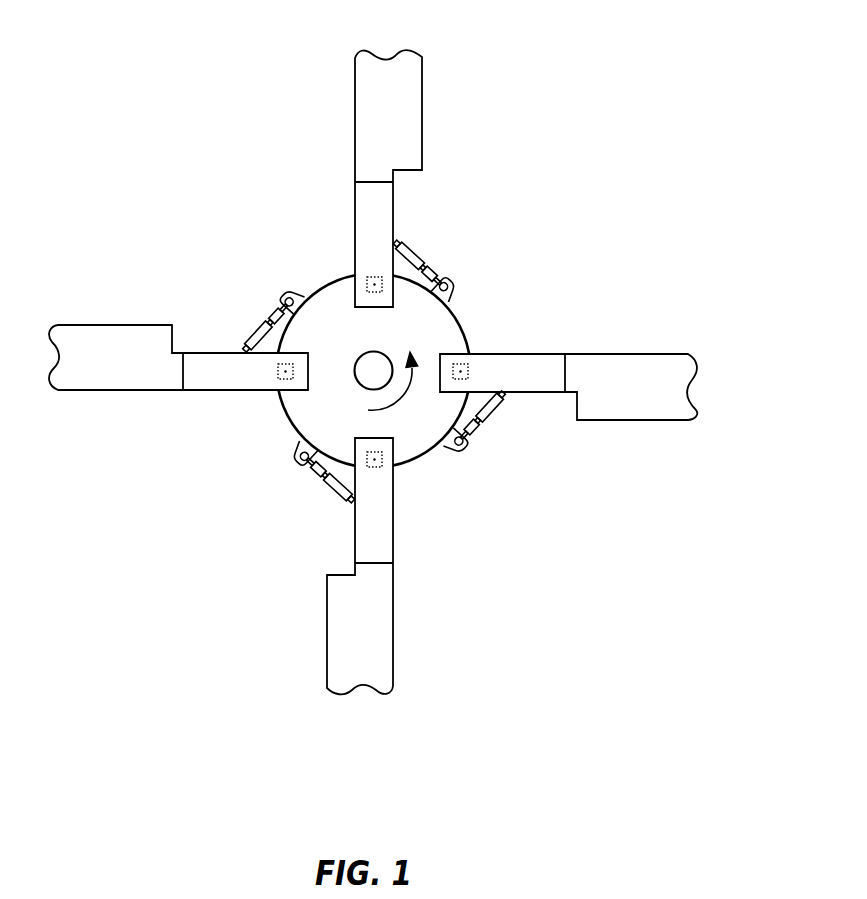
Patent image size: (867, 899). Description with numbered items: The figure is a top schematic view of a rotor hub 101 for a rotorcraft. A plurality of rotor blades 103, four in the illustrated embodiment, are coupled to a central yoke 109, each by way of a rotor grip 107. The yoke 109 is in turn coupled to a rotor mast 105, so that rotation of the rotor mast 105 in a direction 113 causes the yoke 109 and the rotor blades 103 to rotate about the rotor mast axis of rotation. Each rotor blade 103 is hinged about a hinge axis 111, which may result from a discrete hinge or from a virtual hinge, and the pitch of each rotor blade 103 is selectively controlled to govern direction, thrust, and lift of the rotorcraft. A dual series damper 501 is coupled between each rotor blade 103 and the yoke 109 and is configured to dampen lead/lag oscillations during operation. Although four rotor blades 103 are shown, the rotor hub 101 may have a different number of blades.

The rotor hub 101 is at (157, 228).
The rotor blade 103 is at (332, 178).
The rotor mast 105 is at (358, 357).
The rotor grip 107 is at (355, 232).
The yoke 109 is at (462, 322).
The hinge axis 111 is at (375, 285).
The direction 113 is at (406, 405).
The dual series damper 501 is at (433, 253).